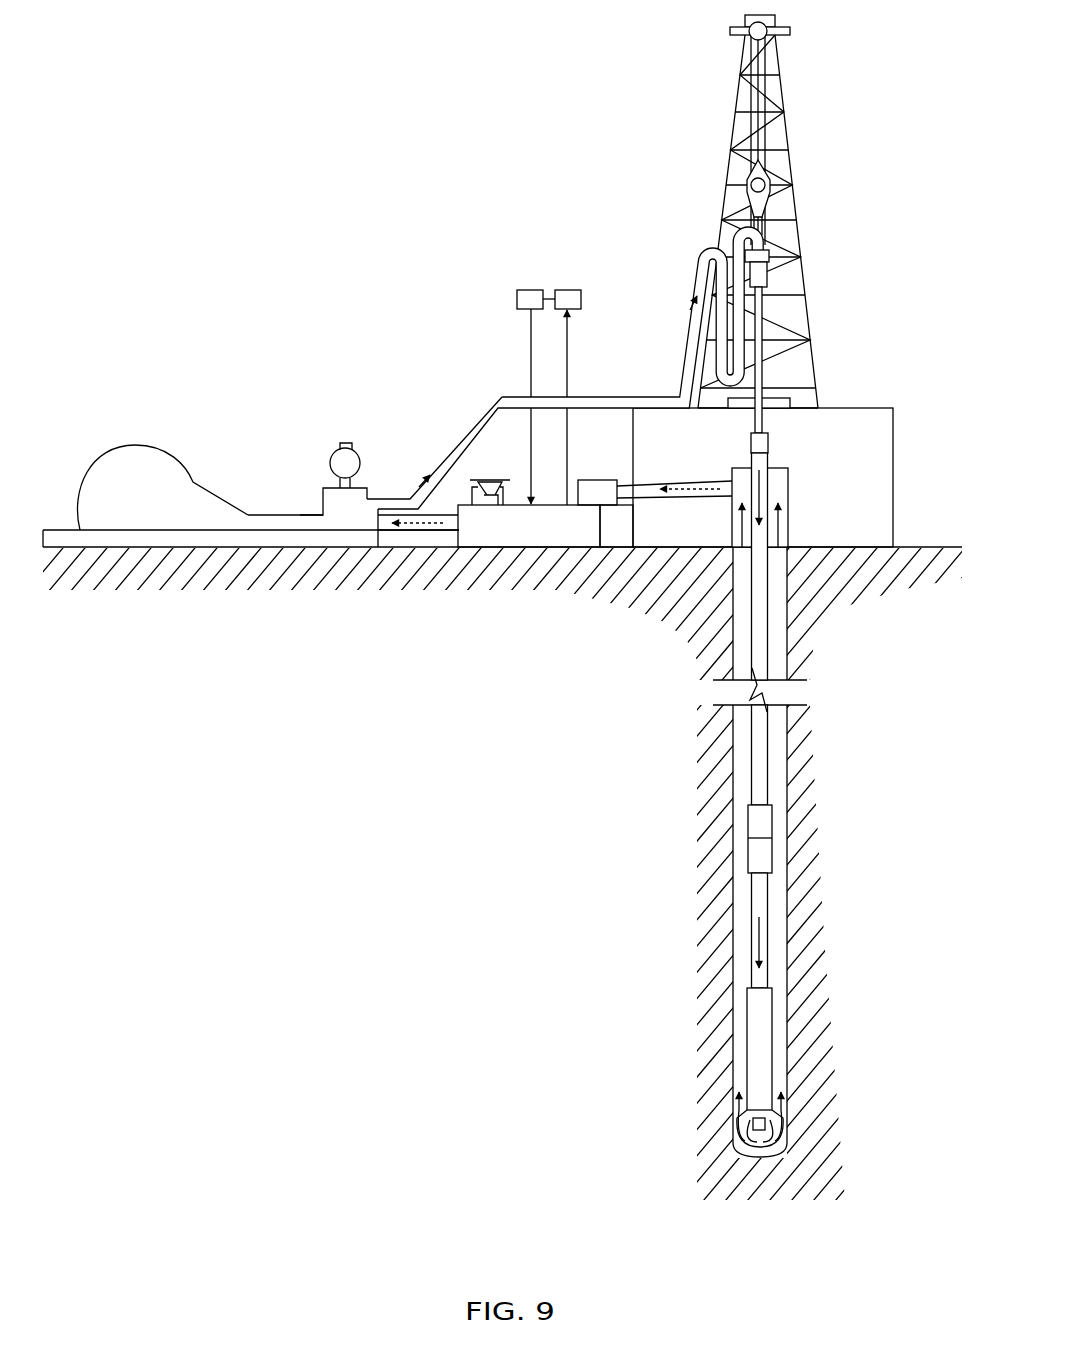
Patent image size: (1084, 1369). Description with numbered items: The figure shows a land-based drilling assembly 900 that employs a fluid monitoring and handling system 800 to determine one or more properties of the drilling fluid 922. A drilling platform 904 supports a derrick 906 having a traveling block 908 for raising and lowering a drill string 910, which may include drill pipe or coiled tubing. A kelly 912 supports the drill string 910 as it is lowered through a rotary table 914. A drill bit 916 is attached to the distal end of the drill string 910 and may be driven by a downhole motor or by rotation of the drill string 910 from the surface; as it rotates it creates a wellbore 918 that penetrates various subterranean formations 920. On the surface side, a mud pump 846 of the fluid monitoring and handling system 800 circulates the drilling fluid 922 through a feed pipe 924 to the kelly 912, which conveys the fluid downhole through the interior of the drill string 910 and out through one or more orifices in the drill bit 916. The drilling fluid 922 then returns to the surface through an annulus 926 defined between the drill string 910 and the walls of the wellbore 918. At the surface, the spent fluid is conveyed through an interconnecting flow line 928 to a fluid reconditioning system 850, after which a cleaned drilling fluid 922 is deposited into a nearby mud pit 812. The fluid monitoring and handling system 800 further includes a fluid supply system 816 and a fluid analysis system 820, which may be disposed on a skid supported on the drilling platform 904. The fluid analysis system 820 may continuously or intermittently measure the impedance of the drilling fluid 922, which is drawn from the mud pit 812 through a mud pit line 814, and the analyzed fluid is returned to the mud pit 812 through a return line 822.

The drilling assembly 900 is at (456, 104).
The fluid monitoring and handling system 800 is at (323, 388).
The mud pump 846 is at (150, 510).
The drilling fluid 922 is at (390, 499).
The feed pipe 924 is at (502, 397).
The fluid analysis system 820 is at (527, 289).
The fluid supply system 816 is at (570, 289).
The return line 822 is at (531, 334).
The mud pit line 814 is at (570, 347).
The fluid reconditioning system 850 is at (603, 480).
The interconnecting flow line 928 is at (703, 497).
The mud pit 812 is at (577, 538).
The drilling platform 904 is at (893, 428).
The derrick 906 is at (786, 126).
The traveling block 908 is at (771, 180).
The kelly 912 is at (762, 306).
The rotary table 914 is at (790, 403).
The drill string 910 is at (762, 630).
The wellbore 918 is at (789, 760).
The subterranean formations 920 is at (612, 856).
The annulus 926 is at (777, 935).
The drill bit 916 is at (777, 1120).